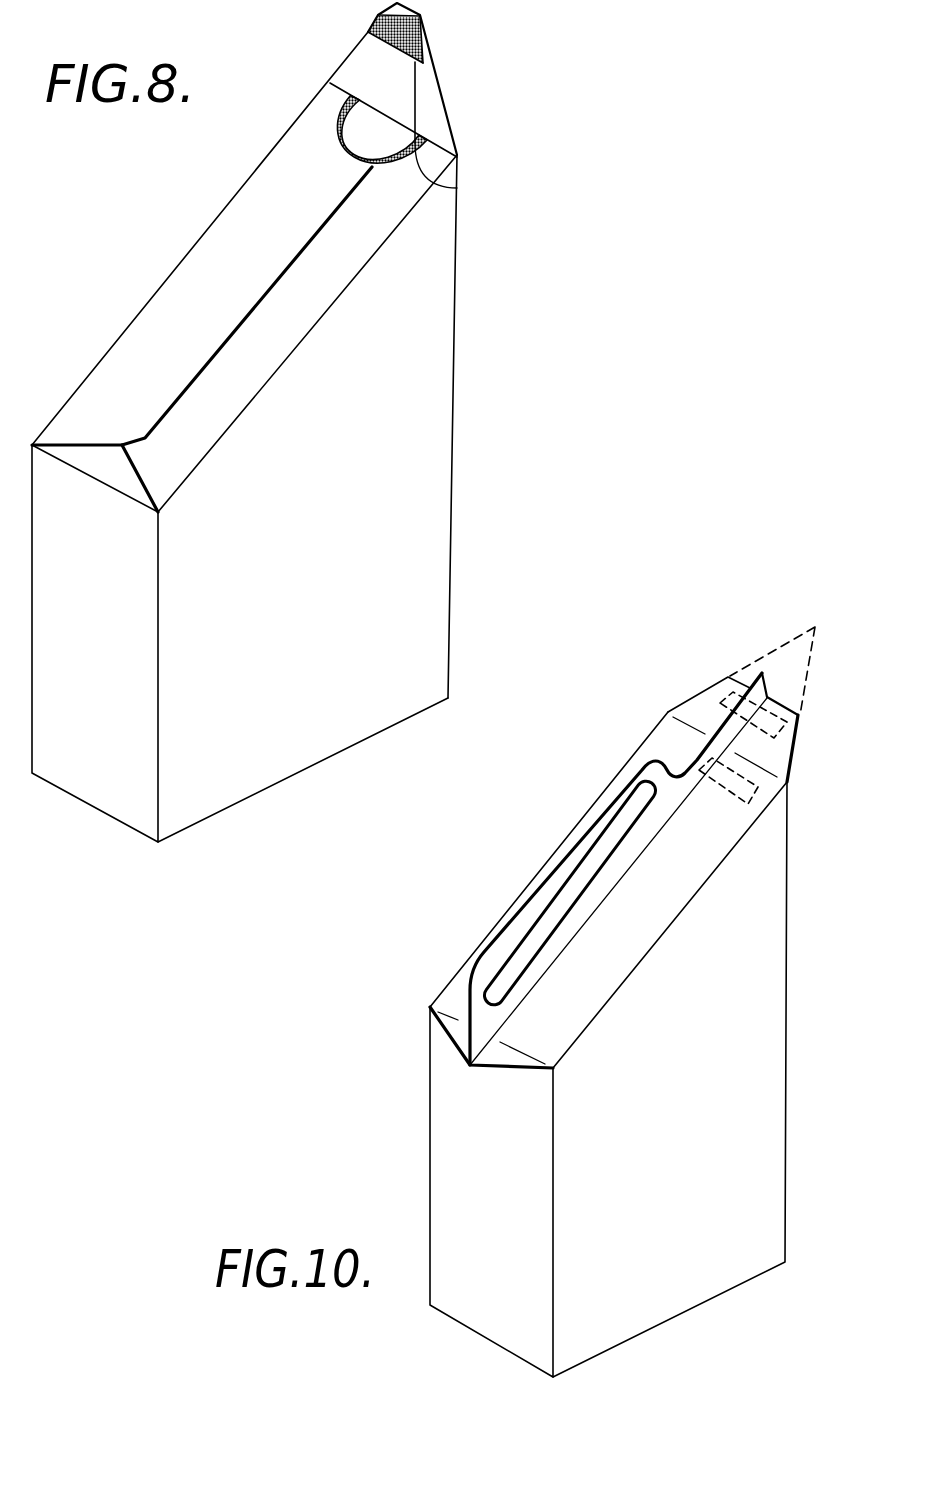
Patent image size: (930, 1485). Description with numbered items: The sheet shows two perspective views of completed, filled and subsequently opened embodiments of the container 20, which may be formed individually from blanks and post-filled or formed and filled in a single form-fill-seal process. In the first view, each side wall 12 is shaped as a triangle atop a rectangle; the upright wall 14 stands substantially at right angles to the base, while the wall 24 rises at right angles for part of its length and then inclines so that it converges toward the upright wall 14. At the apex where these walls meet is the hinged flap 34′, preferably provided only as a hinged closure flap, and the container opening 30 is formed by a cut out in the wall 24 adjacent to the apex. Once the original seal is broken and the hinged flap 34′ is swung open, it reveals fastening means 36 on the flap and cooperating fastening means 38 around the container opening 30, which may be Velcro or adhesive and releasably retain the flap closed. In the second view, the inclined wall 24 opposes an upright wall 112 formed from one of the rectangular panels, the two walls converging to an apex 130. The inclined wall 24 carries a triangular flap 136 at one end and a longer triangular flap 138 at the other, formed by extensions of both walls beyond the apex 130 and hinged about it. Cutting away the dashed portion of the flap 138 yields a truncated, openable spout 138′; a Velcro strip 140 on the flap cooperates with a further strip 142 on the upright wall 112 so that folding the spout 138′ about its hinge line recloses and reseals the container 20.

In FIG. 8, the side wall 12 is at (306, 543).
In FIG. 8, the upright wall 14 is at (457, 338).
In FIG. 8, the container 20 is at (452, 605).
In FIG. 10, the container 20 is at (790, 1183).
In FIG. 8, the inclined wall 24 is at (54, 403).
In FIG. 10, the inclined wall 24 is at (655, 745).
In FIG. 8, the container opening 30 is at (457, 188).
In FIG. 8, the hinged flap 34′ is at (440, 88).
In FIG. 8, the fastening means 36 is at (368, 32).
In FIG. 8, the cooperating fastening means 38 is at (333, 130).
In FIG. 10, the upright wall 112 is at (787, 980).
In FIG. 10, the apex 130 is at (673, 717).
In FIG. 10, the triangular flap 136 is at (447, 1017).
In FIG. 10, the longer triangular flap 138 is at (770, 650).
In FIG. 10, the truncated openable spout 138′ is at (690, 691).
In FIG. 10, the Velcro strip 140 is at (793, 743).
In FIG. 10, the further Velcro strip 142 is at (757, 793).